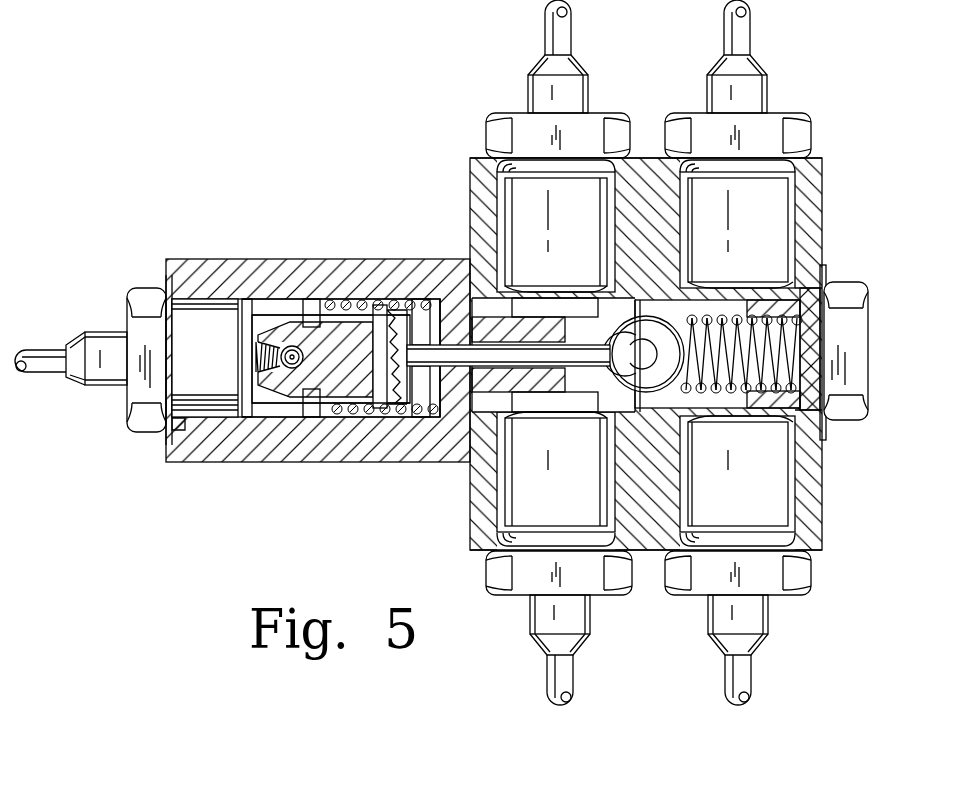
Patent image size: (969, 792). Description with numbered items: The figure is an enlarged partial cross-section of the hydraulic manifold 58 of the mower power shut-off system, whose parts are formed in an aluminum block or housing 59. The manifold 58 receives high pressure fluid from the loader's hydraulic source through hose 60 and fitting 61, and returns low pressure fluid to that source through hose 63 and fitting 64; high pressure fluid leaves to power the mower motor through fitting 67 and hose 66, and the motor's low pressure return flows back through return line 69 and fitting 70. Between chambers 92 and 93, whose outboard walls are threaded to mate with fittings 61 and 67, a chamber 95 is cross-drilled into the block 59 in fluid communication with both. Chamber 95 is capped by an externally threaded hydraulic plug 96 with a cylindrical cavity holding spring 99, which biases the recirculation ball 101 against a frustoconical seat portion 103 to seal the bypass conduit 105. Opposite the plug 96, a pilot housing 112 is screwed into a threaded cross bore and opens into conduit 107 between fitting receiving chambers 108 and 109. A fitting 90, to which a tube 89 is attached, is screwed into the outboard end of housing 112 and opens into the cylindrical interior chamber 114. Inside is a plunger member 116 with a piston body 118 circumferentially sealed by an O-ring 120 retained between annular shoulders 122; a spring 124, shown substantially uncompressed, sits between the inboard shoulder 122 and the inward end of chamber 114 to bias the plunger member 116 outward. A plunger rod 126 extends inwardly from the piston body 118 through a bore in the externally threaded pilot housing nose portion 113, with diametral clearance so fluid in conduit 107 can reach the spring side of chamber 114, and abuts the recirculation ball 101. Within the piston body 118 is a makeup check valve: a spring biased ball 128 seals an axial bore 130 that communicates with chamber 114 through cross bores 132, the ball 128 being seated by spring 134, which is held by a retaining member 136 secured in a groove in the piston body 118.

The hydraulic manifold 58 is at (238, 163).
The aluminum block or housing 59 is at (655, 165).
The hydraulic line or hose 60 is at (745, 30).
The fitting 61 is at (802, 135).
The hose 63 is at (548, 35).
The fitting 64 is at (492, 135).
The hose 66 is at (750, 672).
The fitting 67 is at (805, 578).
The return line 69 is at (572, 672).
The fitting 70 is at (590, 585).
The tube 89 is at (55, 355).
The fitting 90 is at (105, 345).
The chamber 92 is at (775, 232).
The chamber 93 is at (775, 490).
The chamber 95 is at (745, 310).
The hydraulic plug 96 is at (842, 340).
The spring 99 is at (812, 420).
The recirculation ball 101 is at (658, 330).
The frustoconical seat portion 103 is at (652, 390).
The bypass conduit 105 is at (555, 400).
The conduit 107 is at (585, 315).
The fitting receiving chamber 108 is at (525, 228).
The fitting receiving chamber 109 is at (520, 490).
The pilot housing 112 is at (310, 300).
The pilot housing nose portion 113 is at (490, 410).
The cylindrical interior chamber 114 is at (214, 262).
The plunger member 116 is at (263, 420).
The piston body 118 is at (285, 300).
The O-ring 120 is at (302, 400).
The annular shoulders 122 is at (359, 300).
The spring 124 is at (400, 300).
The plunger rod 126 is at (436, 412).
The spring biased ball 128 is at (250, 420).
The axial bore 130 is at (378, 402).
The cross bores 132 is at (396, 404).
The spring 134 is at (285, 372).
The retaining member 136 is at (258, 362).